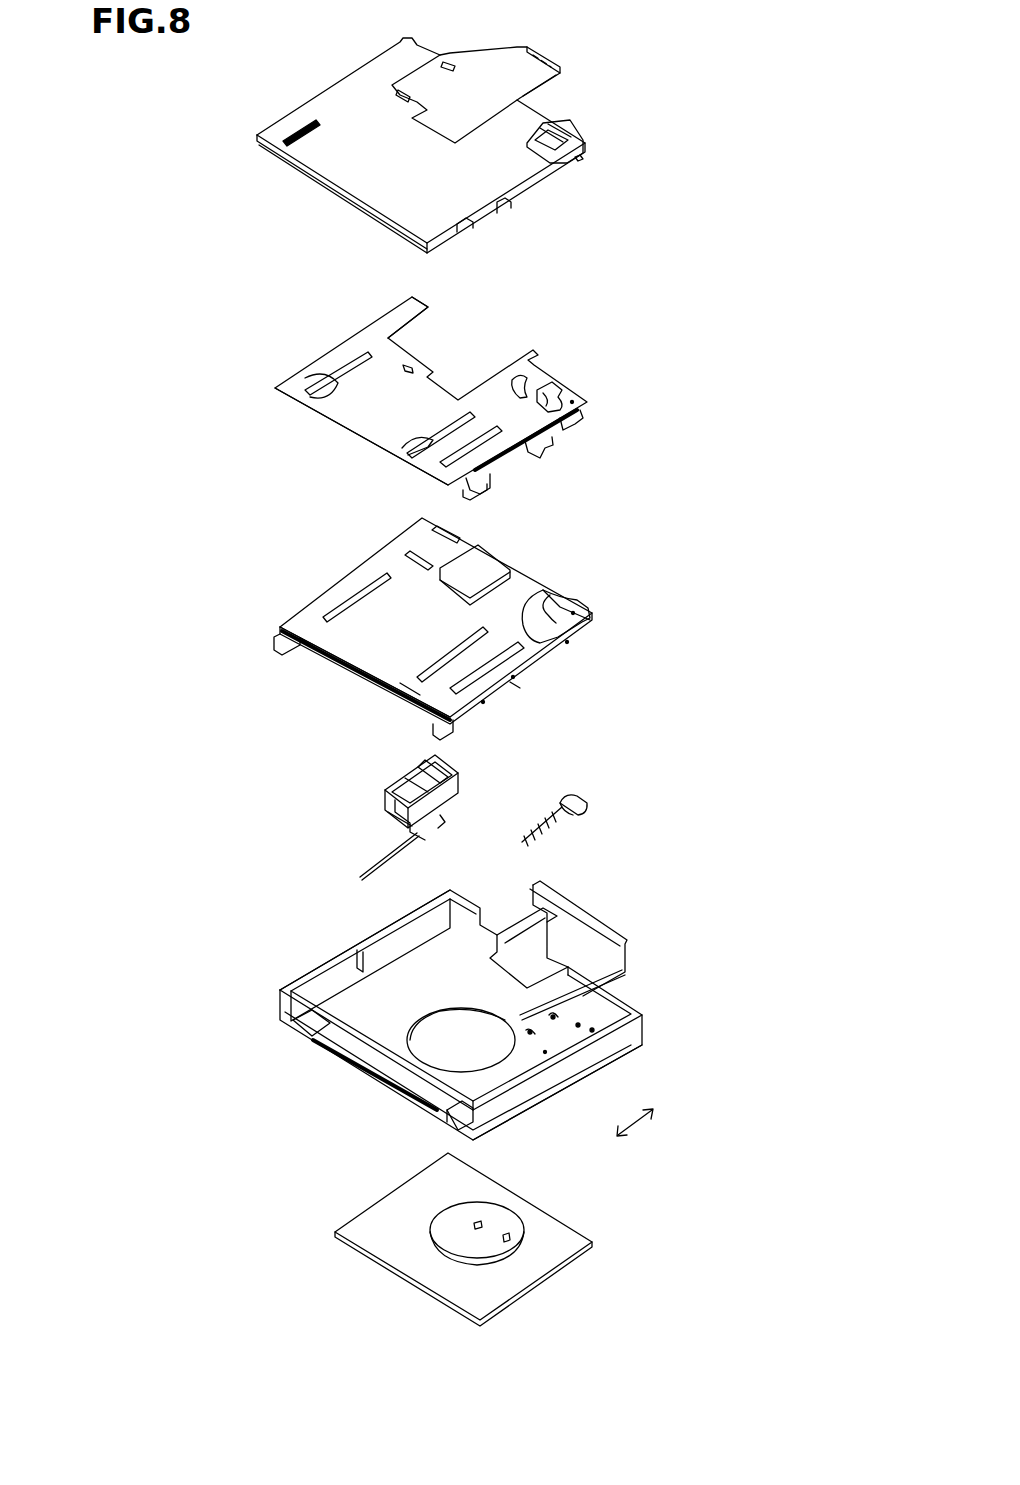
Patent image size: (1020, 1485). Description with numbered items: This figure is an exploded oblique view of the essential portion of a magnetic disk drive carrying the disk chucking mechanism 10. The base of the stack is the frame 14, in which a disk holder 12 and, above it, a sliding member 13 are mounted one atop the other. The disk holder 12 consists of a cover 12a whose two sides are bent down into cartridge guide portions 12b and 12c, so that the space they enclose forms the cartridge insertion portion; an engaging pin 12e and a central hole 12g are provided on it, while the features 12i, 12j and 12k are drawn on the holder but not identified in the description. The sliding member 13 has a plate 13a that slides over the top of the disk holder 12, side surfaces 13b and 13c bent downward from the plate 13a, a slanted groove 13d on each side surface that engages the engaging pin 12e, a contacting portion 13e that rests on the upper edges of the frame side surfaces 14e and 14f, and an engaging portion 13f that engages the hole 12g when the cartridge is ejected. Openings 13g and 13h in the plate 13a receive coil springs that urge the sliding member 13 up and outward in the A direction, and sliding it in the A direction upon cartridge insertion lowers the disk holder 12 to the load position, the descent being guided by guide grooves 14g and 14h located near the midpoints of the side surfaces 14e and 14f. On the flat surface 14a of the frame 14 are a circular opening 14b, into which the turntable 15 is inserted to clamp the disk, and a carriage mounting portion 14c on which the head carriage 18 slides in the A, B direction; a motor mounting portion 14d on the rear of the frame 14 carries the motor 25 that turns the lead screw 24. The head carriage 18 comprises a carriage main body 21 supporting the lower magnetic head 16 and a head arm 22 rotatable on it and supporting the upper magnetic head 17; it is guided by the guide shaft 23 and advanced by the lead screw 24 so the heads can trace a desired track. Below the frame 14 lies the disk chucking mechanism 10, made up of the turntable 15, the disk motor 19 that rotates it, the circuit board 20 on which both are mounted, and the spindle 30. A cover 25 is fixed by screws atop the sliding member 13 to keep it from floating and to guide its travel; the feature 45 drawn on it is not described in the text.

The disk chucking mechanism 10 is at (377, 1183).
The disk holder 12 is at (442, 641).
The cover 12a is at (363, 653).
The cartridge guide portion 12b is at (275, 653).
The cartridge guide portion 12c is at (437, 733).
The engaging pin 12e is at (567, 642).
The hole 12g is at (443, 617).
The side edge 12i is at (307, 645).
The edge portion 12j is at (410, 683).
The slot 12k is at (517, 680).
The sliding member 13 is at (429, 407).
The plate 13a is at (345, 418).
The side surface 13b is at (538, 452).
The side surface 13c is at (330, 350).
The slanted groove 13d is at (580, 418).
The contacting portion 13e is at (457, 490).
The engaging portion 13f is at (443, 390).
The opening 13g is at (335, 395).
The opening 13h is at (395, 455).
The frame 14 is at (648, 1025).
The flat surface 14a is at (363, 1047).
The circular opening 14b is at (427, 1030).
The carriage mounting portion 14c is at (570, 948).
The motor mounting portion 14d is at (537, 923).
The side surface 14e is at (318, 980).
The side surface 14f is at (555, 1087).
The guide groove 14g is at (363, 967).
The guide groove 14h is at (433, 1107).
The turntable 15 is at (500, 1213).
The lower magnetic head 16 is at (388, 813).
The upper magnetic head 17 is at (387, 805).
The head carriage 18 is at (470, 783).
The disk motor 19 is at (527, 1233).
The circuit board 20 is at (580, 1240).
The carriage main body 21 is at (460, 802).
The head arm 22 is at (415, 787).
The guide shaft 23 is at (397, 845).
The lead screw 24 is at (550, 830).
The cover 25 is at (340, 68).
The spindle 30 is at (475, 1225).
The flap 45 is at (553, 103).